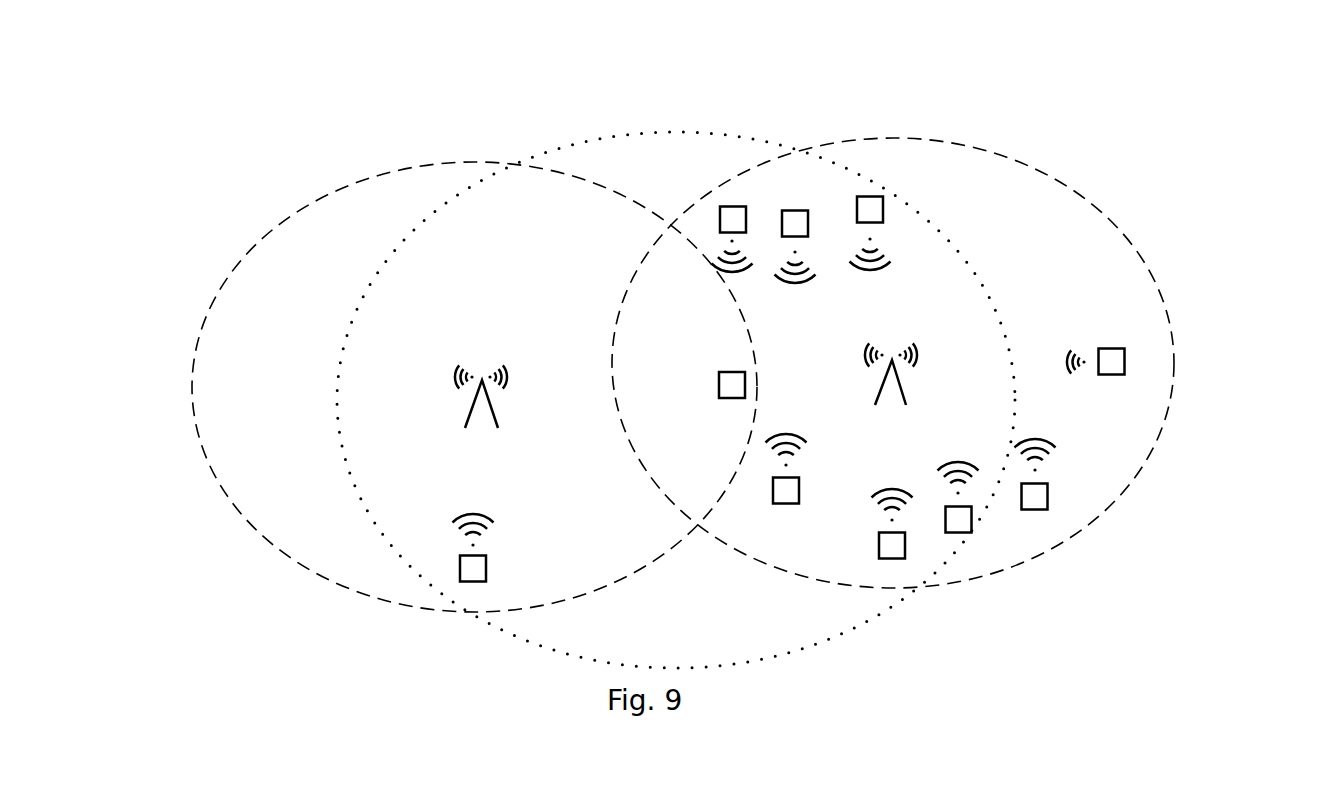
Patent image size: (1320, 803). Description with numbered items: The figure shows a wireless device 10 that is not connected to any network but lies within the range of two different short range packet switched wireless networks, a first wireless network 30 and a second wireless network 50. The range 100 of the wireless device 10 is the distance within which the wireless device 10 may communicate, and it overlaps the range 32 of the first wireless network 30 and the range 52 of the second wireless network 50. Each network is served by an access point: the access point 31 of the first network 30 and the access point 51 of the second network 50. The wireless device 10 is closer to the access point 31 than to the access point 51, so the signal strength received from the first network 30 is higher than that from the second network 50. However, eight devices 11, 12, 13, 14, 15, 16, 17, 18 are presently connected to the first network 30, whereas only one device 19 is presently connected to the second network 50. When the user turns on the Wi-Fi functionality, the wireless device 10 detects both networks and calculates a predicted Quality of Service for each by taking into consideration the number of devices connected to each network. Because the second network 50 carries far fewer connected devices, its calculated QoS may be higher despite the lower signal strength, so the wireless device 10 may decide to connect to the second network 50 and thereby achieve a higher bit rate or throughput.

The range of the wireless device 100 is at (680, 135).
The second wireless network 50 is at (219, 214).
The access point of the second network 51 is at (472, 411).
The range of the second wireless network 52 is at (542, 166).
The first wireless network 30 is at (1127, 141).
The access point of the first network 31 is at (884, 383).
The range of the first wireless network 32 is at (1138, 250).
The wireless device 10 is at (719, 381).
The device connected to the first network 11 is at (869, 197).
The device connected to the first network 12 is at (1125, 361).
The device connected to the first network 13 is at (895, 558).
The device connected to the first network 14 is at (965, 532).
The device connected to the first network 15 is at (1040, 510).
The device connected to the first network 16 is at (734, 207).
The device connected to the first network 17 is at (797, 210).
The device connected to the first network 18 is at (788, 503).
The device connected to the second network 19 is at (473, 582).